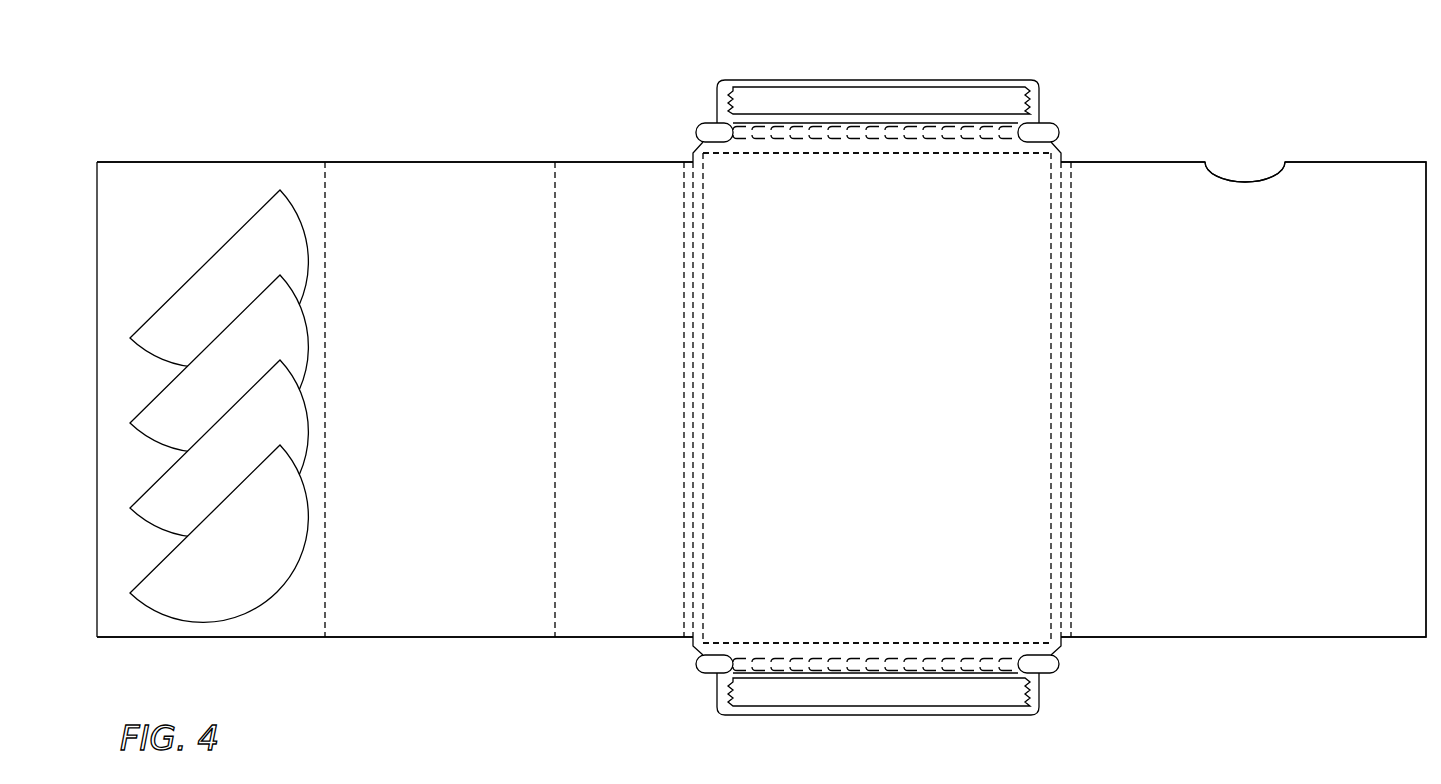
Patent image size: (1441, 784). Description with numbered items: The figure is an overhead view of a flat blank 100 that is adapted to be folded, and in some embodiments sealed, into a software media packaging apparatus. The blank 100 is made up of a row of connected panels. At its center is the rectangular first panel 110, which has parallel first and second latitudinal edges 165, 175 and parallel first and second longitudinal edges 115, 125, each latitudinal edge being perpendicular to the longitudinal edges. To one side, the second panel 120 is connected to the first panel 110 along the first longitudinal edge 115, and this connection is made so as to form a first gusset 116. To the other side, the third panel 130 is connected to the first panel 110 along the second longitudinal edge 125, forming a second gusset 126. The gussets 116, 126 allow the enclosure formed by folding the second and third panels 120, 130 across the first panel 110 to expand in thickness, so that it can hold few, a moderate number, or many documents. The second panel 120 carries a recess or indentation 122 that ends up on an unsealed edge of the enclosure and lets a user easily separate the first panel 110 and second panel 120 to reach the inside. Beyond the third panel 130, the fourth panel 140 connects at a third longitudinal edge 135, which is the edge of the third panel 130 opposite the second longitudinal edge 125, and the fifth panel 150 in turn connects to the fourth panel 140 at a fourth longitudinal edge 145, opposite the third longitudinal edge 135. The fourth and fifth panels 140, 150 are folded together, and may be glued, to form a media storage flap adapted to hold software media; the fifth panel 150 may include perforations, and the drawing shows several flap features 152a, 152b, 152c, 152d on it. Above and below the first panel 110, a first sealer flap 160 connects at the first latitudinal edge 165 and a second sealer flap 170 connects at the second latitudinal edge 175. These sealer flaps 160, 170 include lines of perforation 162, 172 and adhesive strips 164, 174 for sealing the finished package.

The blank 100 is at (160, 88).
The first panel 110 is at (897, 616).
The first longitudinal edge 115 is at (1061, 342).
The first gusset 116 is at (1071, 408).
The second panel 120 is at (1277, 616).
The indentation 122 is at (1243, 182).
The second longitudinal edge 125 is at (693, 338).
The second gusset 126 is at (703, 408).
The third panel 130 is at (644, 616).
The third longitudinal edge 135 is at (555, 343).
The fourth panel 140 is at (467, 616).
The fourth longitudinal edge 145 is at (325, 338).
The fifth panel 150 is at (160, 196).
The flap 152a is at (205, 265).
The flap 152b is at (205, 350).
The flap 152c is at (205, 435).
The flap 152d is at (205, 520).
The first sealer flap 160 is at (1003, 81).
The line of perforation 162 is at (790, 142).
The adhesive strip 164 is at (798, 90).
The first latitudinal edge 165 is at (921, 155).
The second sealer flap 170 is at (1003, 715).
The line of perforation 172 is at (790, 660).
The adhesive strip 174 is at (795, 706).
The second latitudinal edge 175 is at (957, 643).